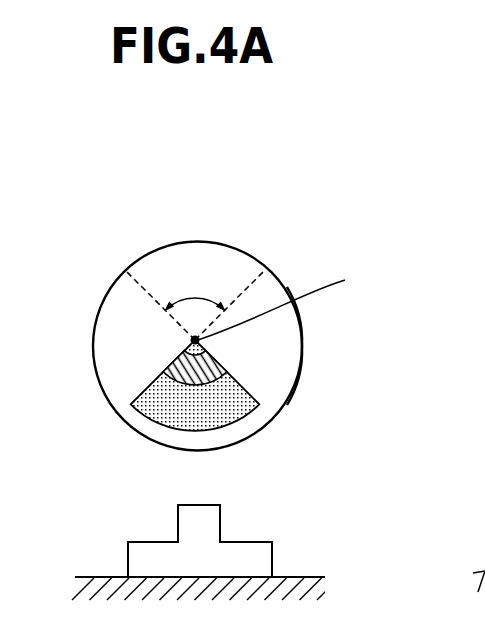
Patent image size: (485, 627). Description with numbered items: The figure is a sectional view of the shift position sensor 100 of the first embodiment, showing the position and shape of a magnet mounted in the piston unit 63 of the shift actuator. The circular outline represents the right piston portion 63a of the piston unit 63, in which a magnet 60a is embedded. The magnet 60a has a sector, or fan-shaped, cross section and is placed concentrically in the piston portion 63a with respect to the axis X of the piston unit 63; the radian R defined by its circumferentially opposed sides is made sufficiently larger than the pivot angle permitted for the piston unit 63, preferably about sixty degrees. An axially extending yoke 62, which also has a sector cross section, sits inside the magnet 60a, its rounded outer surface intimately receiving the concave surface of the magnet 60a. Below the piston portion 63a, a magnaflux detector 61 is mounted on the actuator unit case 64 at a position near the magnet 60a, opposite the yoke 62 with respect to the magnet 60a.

The probe / measuring apparatus 100 is at (328, 135).
The piston unit 63 is at (262, 251).
The piston portion 63a is at (302, 338).
The magnet 60a is at (232, 398).
The yoke 62 is at (192, 363).
The magnaflux detector 61 is at (203, 520).
The actuator unit case 64 is at (297, 577).